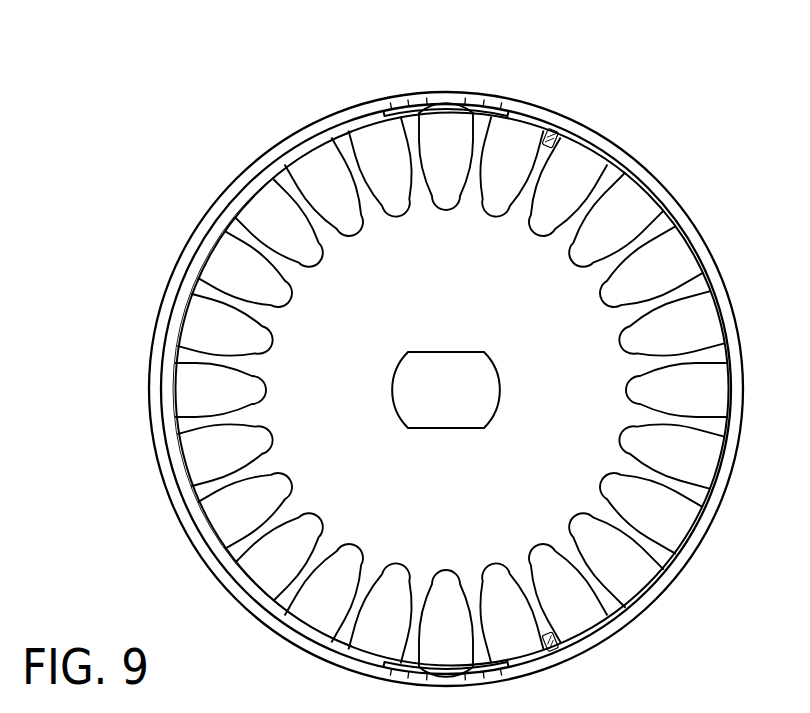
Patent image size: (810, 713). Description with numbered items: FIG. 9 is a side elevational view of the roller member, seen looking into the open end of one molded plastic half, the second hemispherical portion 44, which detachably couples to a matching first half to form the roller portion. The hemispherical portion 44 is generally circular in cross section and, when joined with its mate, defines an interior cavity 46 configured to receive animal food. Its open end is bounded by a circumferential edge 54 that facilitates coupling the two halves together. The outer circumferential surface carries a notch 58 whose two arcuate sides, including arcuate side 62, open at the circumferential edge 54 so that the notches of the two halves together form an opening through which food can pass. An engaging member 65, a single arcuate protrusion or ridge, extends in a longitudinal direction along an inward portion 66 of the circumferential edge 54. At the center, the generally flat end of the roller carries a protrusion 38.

The protrusion 38 is at (470, 392).
The second hemispherical portion 44 is at (690, 226).
The cavity 46 is at (528, 283).
The circumferential edge 54 is at (304, 153).
The notch 58 is at (443, 103).
The arcuate side 62 is at (473, 102).
The engaging member 65 is at (180, 470).
The inward portion 66 is at (203, 245).